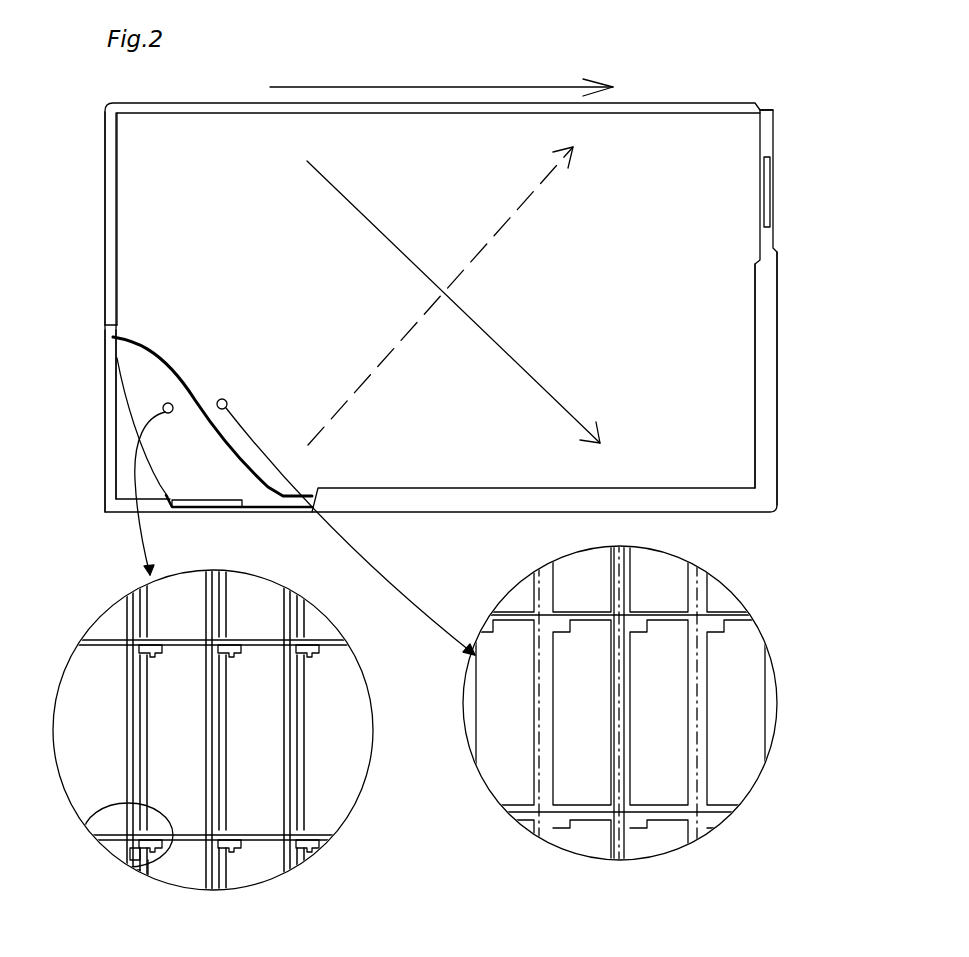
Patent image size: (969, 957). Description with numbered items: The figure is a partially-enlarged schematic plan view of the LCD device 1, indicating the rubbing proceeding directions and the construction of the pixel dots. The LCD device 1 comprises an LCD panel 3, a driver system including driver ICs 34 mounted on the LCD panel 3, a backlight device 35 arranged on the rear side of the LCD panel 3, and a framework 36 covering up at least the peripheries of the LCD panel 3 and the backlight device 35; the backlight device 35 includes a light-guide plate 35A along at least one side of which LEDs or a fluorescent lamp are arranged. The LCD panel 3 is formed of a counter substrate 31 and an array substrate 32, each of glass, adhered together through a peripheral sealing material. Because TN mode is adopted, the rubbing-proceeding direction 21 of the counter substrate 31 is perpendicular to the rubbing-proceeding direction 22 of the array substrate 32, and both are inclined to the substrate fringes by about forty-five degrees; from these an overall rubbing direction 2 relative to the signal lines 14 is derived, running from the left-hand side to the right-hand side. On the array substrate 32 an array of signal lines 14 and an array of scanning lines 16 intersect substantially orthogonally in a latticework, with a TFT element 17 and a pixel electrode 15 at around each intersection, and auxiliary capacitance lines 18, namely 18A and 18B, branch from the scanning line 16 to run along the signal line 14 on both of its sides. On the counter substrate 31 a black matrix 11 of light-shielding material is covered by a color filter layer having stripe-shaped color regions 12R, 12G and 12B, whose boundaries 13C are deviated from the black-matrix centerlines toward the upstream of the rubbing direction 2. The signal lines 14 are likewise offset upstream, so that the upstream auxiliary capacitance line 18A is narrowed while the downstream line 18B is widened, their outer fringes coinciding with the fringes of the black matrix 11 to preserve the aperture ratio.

The LCD device 1 is at (88, 95).
The rubbing direction 2 is at (505, 87).
The LCD panel 3 is at (243, 544).
The black matrix 11 is at (535, 600).
The red color region 12R is at (582, 705).
The green color region 12G is at (659, 705).
The blue color region 12B is at (620, 705).
The boundary between color regions 13C is at (540, 567).
The signal line 14 is at (138, 650).
The pixel electrode 15 is at (173, 790).
The scanning line 16 is at (98, 645).
The TFT element 17 is at (152, 635).
The auxiliary capacitance line 18 is at (300, 803).
The auxiliary capacitance line 18A is at (128, 805).
The auxiliary capacitance line 18B is at (147, 872).
The rubbing-proceeding direction 21 is at (520, 367).
The rubbing-proceeding direction 22 is at (513, 215).
The counter substrate 31 is at (268, 466).
The array substrate 32 is at (228, 477).
The driver IC 34 is at (765, 197).
The backlight device 35 is at (768, 108).
The light-guide plate 35A is at (127, 413).
The framework 36 is at (108, 277).